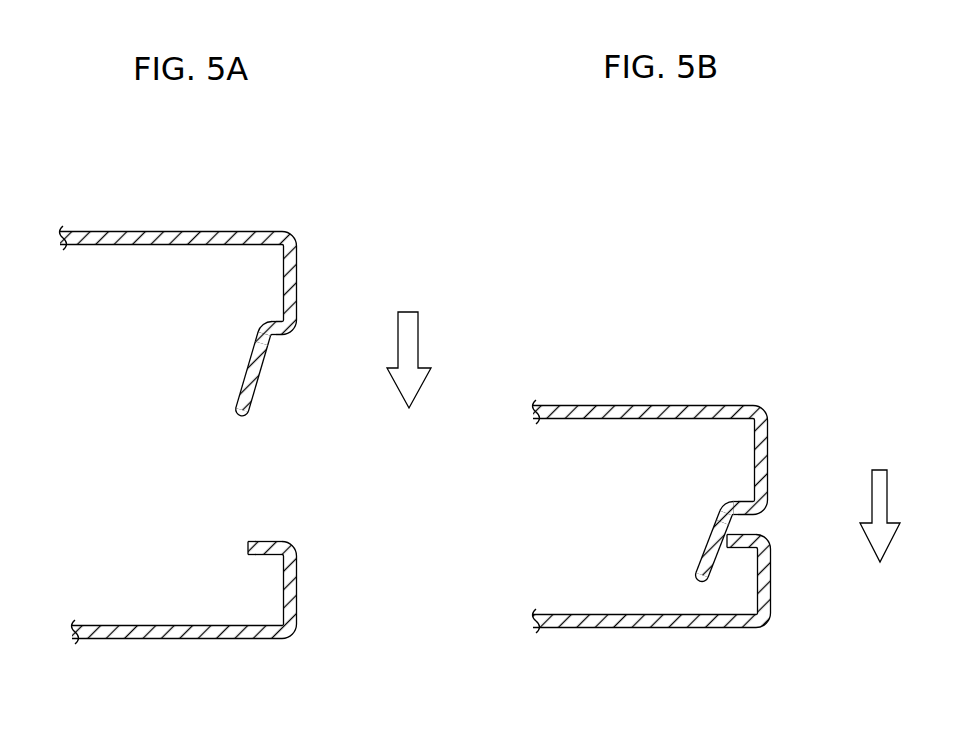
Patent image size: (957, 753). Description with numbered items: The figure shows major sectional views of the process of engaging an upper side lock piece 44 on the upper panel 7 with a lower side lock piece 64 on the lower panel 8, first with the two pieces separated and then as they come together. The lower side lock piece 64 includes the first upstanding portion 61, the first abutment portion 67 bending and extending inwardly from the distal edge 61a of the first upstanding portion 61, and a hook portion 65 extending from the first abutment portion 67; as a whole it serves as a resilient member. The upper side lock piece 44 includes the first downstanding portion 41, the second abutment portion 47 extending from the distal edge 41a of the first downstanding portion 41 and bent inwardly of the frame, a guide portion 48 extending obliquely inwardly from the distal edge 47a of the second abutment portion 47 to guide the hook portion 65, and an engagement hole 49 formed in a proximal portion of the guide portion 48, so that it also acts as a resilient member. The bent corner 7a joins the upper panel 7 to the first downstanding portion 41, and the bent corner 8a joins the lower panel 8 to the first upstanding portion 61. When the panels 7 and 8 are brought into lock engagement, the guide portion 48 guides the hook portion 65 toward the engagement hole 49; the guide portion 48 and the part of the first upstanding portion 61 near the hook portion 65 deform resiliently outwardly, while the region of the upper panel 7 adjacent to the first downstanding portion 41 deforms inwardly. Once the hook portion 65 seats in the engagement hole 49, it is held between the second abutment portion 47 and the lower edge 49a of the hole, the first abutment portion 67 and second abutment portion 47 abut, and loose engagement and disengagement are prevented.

In FIG. 5A, the upper panel 7 is at (150, 233).
In FIG. 5B, the upper panel 7 is at (640, 412).
In FIG. 5A, the bent corner portion of panel 7a is at (293, 234).
In FIG. 5B, the bent corner portion of panel 7a is at (765, 410).
In FIG. 5A, the first downstanding portion 41 is at (298, 260).
In FIG. 5B, the first downstanding portion 41 is at (769, 427).
In FIG. 5A, the distal edge of the first downstanding portion 41a is at (298, 318).
In FIG. 5B, the distal edge of the first downstanding portion 41a is at (768, 492).
In FIG. 5A, the upper side lock piece 44 is at (266, 292).
In FIG. 5B, the upper side lock piece 44 is at (720, 448).
In FIG. 5A, the second abutment portion 47 is at (277, 334).
In FIG. 5B, the second abutment portion 47 is at (770, 512).
In FIG. 5A, the distal edge of the second abutment portion 47a is at (266, 337).
In FIG. 5B, the distal edge of the second abutment portion 47a is at (748, 516).
In FIG. 5A, the guide portion 48 is at (236, 405).
In FIG. 5B, the guide portion 48 is at (700, 570).
In FIG. 5A, the engagement hole 49 is at (258, 329).
In FIG. 5B, the engagement hole 49 is at (722, 502).
In FIG. 5A, the lower edge of the engagement hole 49a is at (252, 336).
In FIG. 5B, the lower edge of the engagement hole 49a is at (718, 508).
In FIG. 5A, the lower panel 8 is at (173, 633).
In FIG. 5B, the lower panel 8 is at (642, 628).
In FIG. 5A, the bent corner portion of mating panel 8a is at (294, 641).
In FIG. 5B, the bent corner portion of mating panel 8a is at (771, 629).
In FIG. 5A, the first upstanding portion 61 is at (290, 590).
In FIG. 5B, the first upstanding portion 61 is at (771, 580).
In FIG. 5A, the distal edge of the first upstanding portion 61a is at (290, 542).
In FIG. 5B, the distal edge of the first upstanding portion 61a is at (771, 550).
In FIG. 5A, the lower side lock piece 64 is at (247, 609).
In FIG. 5B, the lower side lock piece 64 is at (731, 621).
In FIG. 5A, the hook portion 65 is at (257, 553).
In FIG. 5B, the hook portion 65 is at (726, 552).
In FIG. 5A, the first abutment portion 67 is at (258, 542).
In FIG. 5B, the first abutment portion 67 is at (755, 537).